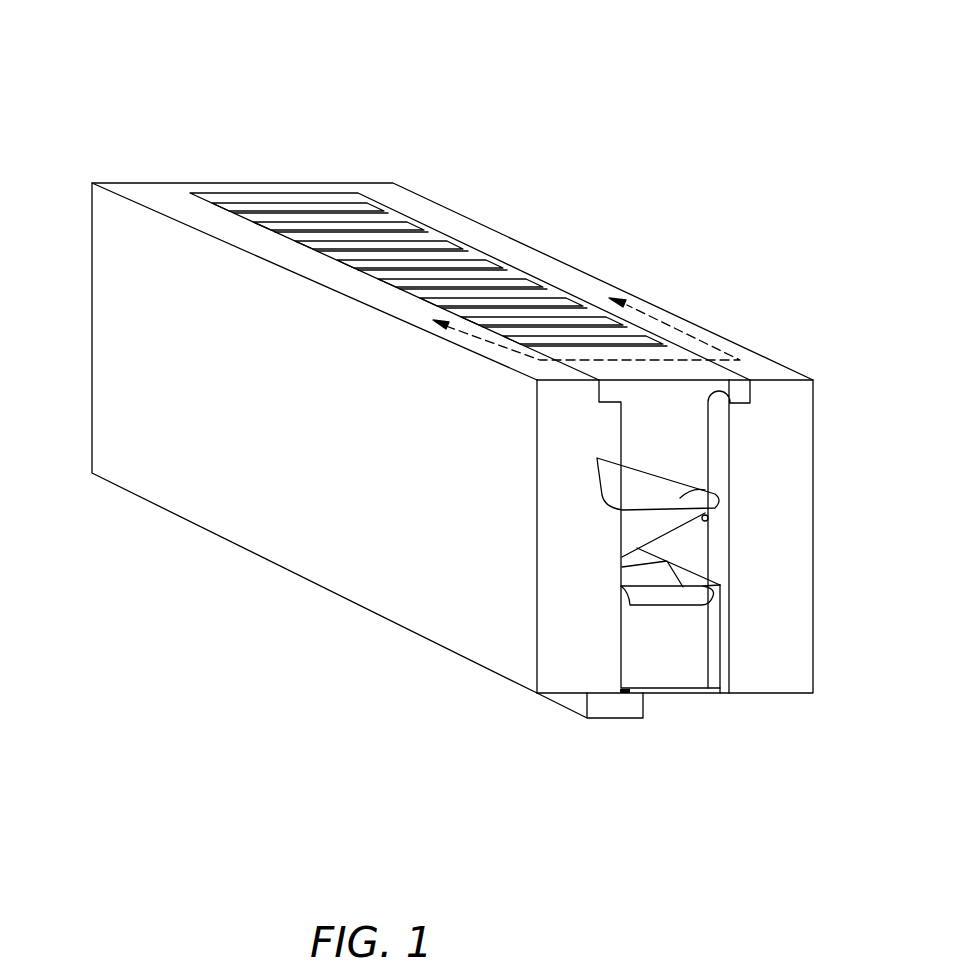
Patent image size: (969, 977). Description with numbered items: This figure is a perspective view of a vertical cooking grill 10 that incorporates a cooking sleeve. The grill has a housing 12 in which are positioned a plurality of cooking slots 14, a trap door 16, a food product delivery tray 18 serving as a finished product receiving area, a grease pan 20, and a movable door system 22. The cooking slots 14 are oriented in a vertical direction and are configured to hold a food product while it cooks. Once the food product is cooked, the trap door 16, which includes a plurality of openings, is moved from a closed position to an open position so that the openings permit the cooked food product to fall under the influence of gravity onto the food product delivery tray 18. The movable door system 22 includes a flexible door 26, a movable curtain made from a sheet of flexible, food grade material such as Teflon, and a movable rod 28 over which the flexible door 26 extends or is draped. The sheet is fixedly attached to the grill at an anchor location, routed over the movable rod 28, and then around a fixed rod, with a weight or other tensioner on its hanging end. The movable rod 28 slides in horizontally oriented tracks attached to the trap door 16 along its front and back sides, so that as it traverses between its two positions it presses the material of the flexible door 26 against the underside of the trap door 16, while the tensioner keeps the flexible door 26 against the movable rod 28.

The vertical cooking grill 10 is at (270, 110).
The housing 12 is at (125, 338).
The cooking slots 14 is at (485, 273).
The trap door 16 is at (715, 494).
The food product delivery tray 18 is at (633, 577).
The grease pan 20 is at (613, 702).
The movable door system 22 is at (615, 528).
The flexible door 26 is at (670, 523).
The movable rod 28 is at (706, 520).